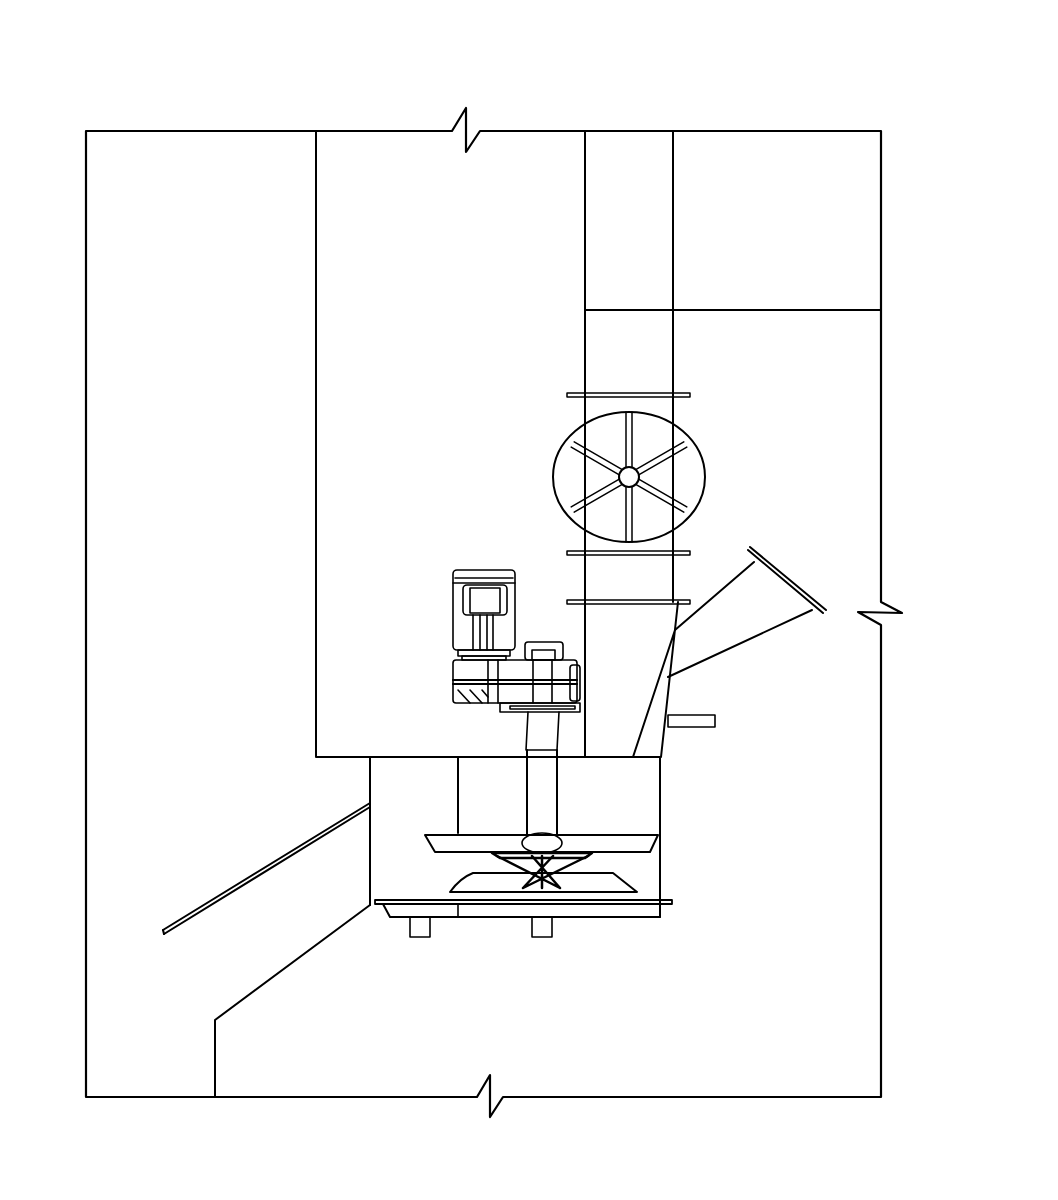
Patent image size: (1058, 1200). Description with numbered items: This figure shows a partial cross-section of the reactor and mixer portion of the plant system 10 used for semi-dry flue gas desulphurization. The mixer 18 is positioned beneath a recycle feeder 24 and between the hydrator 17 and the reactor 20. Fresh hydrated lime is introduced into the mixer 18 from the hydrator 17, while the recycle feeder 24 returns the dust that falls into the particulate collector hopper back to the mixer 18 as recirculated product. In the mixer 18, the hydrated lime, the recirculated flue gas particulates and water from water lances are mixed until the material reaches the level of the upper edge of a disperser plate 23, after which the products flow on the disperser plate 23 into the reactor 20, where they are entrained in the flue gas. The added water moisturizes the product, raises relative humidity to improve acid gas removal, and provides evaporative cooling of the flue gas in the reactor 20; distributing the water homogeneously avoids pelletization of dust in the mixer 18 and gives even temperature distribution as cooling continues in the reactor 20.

The plant system 10 is at (613, 79).
The hydrator 17 is at (813, 590).
The mixer 18 is at (660, 866).
The reactor 20 is at (86, 495).
The disperser plate 23 is at (260, 862).
The recycle feeder 24 is at (706, 470).